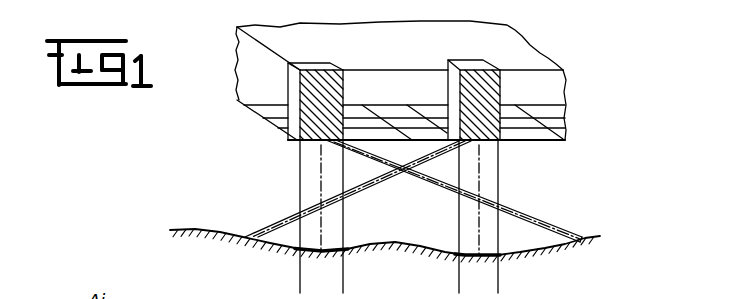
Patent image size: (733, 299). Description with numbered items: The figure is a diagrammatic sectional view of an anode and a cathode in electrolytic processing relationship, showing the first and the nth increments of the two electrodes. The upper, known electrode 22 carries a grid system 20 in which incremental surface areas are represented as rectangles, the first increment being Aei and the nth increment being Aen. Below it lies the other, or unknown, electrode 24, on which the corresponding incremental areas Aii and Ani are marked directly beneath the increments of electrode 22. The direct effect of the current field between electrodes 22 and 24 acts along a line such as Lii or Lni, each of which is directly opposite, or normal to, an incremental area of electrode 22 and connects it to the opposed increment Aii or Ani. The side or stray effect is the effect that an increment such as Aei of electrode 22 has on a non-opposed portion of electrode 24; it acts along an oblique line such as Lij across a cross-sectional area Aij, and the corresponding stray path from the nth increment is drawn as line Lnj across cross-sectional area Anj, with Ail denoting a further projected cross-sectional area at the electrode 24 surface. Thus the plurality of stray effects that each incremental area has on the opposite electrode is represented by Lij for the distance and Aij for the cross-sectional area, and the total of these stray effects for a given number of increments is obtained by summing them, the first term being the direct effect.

The grid system 20 is at (257, 121).
The electrode 22 is at (567, 126).
The electrode 24 is at (588, 246).
The increment of area on the known electrode Aei is at (300, 35).
The nth increment of area on the known electrode Aen is at (500, 35).
The increment of area on the unknown electrode Aii is at (300, 285).
The nth increment of area on the unknown electrode Ani is at (459, 285).
The cross-sectional area of projection Aij is at (508, 246).
The cross-sectional area of stray-effect projection for nth increment Anj is at (277, 220).
The cross-sectional area of projection Ail is at (588, 234).
The direct-effect line Lii is at (322, 172).
The direct-effect line for nth increment Lni is at (480, 172).
The stray-effect line Lij is at (421, 179).
The stray-effect line for nth increment Lnj is at (357, 196).